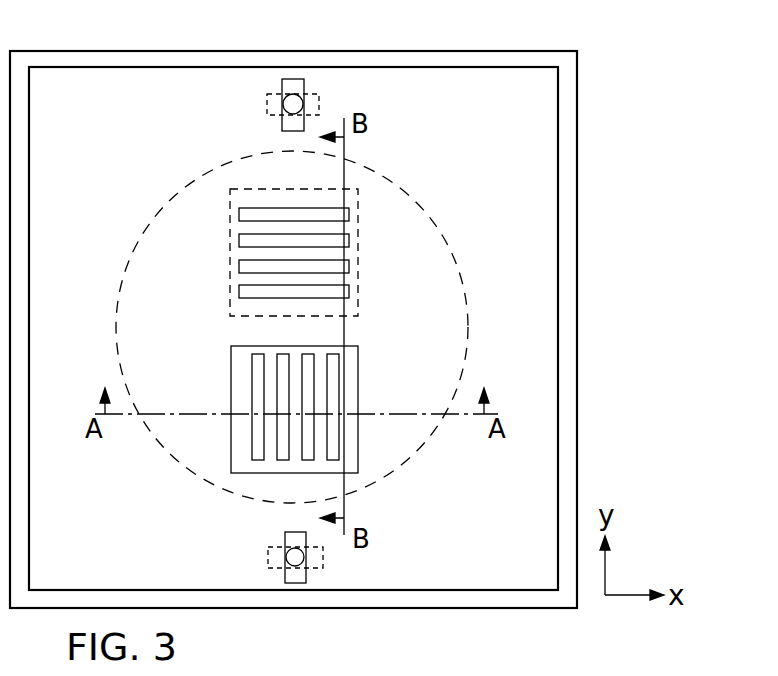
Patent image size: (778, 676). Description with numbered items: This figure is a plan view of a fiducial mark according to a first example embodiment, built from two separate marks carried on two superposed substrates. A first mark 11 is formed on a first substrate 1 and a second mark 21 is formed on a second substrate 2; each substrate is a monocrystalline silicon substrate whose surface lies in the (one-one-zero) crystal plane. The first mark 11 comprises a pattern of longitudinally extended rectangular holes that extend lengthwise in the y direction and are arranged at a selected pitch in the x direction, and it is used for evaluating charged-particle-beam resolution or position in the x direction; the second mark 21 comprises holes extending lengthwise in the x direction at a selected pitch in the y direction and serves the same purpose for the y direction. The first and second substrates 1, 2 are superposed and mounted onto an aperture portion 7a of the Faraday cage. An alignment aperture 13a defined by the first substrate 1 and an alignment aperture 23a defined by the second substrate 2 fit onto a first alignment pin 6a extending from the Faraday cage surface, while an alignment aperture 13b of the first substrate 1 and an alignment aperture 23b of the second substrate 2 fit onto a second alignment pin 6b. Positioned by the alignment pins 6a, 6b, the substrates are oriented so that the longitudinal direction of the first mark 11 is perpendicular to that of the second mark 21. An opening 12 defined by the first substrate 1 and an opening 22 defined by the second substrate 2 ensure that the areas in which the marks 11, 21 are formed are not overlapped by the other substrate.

The first substrate 1 is at (497, 601).
The second substrate 2 is at (450, 575).
The first alignment pin 6a is at (297, 104).
The second alignment pin 6b is at (300, 556).
The aperture portion 7a is at (131, 262).
The first mark 11 is at (250, 462).
The opening 12 is at (258, 317).
The alignment aperture 13a is at (298, 83).
The alignment aperture 13b is at (298, 580).
The second mark 21 is at (367, 205).
The opening 22 is at (352, 381).
The alignment aperture 23a is at (272, 97).
The alignment aperture 23b is at (277, 566).